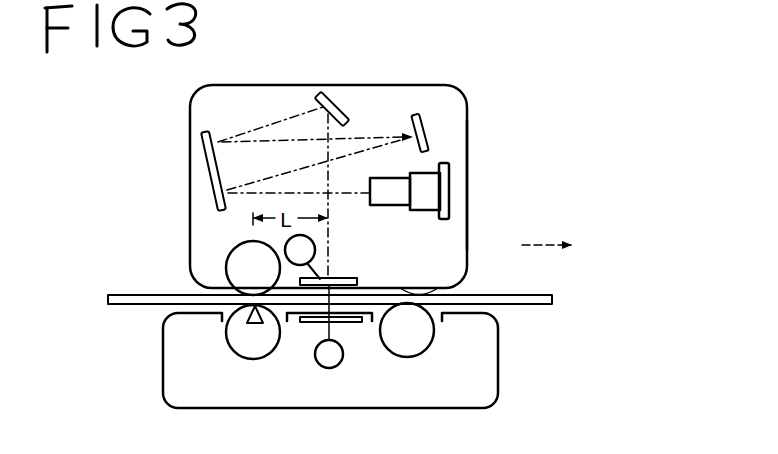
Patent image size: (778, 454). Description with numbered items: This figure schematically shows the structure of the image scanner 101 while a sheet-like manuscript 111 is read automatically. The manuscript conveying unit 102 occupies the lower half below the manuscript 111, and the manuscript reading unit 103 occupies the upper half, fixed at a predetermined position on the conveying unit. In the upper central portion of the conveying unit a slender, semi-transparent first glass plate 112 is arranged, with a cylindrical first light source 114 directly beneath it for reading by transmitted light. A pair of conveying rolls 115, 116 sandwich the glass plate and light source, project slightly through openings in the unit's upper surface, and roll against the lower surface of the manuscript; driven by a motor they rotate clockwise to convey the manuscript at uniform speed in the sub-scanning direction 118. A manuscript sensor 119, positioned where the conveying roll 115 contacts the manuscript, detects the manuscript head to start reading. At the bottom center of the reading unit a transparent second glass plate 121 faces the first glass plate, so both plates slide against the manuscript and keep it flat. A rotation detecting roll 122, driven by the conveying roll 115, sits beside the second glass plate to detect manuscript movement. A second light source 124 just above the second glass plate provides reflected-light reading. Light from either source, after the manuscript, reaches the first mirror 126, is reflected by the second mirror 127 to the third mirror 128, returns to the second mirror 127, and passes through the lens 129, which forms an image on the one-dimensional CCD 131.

The upper unit (image reading unit) housing 101 is at (518, 112).
The manuscript conveying unit 102 is at (498, 352).
The manuscript reading unit 103 is at (467, 177).
The sheet-like manuscript 111 is at (153, 294).
The first glass plate 112 is at (350, 323).
The first light source 114 is at (335, 368).
The conveying roll 115 is at (253, 359).
The conveying roll 116 is at (408, 357).
The sub-scanning direction 118 is at (548, 245).
The manuscript sensor 119 is at (247, 329).
The second glass plate 121 is at (347, 280).
The rotation detecting roll 122 is at (228, 253).
The second light source 124 is at (317, 240).
The first mirror 126 is at (345, 112).
The second mirror 127 is at (210, 153).
The third mirror 128 is at (426, 140).
The lens 129 is at (388, 206).
The one-dimensional CCD 131 is at (425, 211).